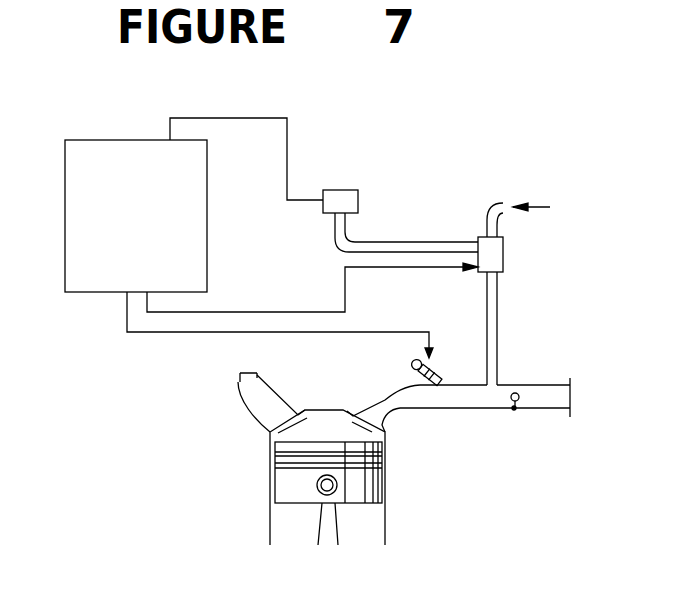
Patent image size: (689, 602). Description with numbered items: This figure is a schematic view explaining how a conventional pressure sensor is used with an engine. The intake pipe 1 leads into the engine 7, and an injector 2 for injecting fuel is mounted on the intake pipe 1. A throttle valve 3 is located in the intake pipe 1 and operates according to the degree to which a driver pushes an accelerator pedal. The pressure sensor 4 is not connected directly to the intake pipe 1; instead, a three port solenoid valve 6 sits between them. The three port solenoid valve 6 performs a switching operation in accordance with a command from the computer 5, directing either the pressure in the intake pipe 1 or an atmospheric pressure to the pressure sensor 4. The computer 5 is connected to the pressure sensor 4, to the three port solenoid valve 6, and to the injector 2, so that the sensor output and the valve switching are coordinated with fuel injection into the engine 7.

The intake pipe 1 is at (550, 402).
The injector 2 is at (418, 380).
The throttle valve 3 is at (512, 410).
The pressure sensor 4 is at (358, 202).
The computer 5 is at (207, 223).
The three port solenoid valve 6 is at (503, 253).
The engine 7 is at (385, 477).